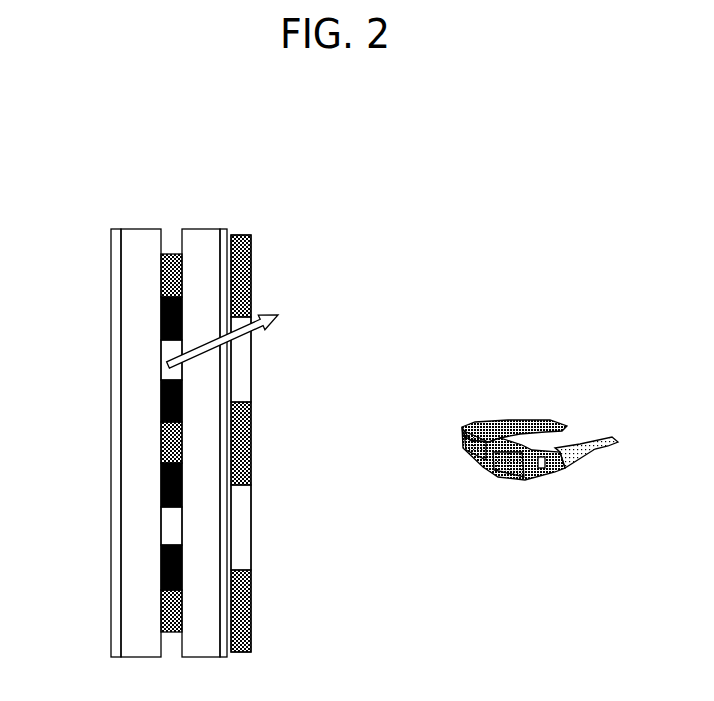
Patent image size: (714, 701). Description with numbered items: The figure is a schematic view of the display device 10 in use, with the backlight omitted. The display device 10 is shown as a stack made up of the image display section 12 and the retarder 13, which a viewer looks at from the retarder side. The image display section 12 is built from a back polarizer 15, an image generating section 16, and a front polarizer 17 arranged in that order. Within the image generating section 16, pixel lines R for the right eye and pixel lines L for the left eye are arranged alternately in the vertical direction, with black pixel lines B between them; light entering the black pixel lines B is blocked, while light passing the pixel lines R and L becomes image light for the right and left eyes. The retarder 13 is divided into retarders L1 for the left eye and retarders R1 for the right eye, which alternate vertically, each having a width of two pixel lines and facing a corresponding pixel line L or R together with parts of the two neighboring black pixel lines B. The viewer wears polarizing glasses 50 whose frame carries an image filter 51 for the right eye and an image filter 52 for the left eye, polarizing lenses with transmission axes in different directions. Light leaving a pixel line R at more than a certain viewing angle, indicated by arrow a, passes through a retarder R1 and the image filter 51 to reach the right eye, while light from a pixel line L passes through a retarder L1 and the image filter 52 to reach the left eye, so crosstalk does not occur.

The display device 10 is at (340, 155).
The image display section 12 is at (202, 176).
The retarder 13 is at (233, 237).
The back polarizer 15 is at (115, 229).
The image generating section 16 is at (225, 225).
The front polarizer 17 is at (226, 229).
The pixel lines for the left eye L is at (162, 283).
The black pixel lines B is at (165, 322).
The pixel lines for the right eye R is at (165, 373).
The retarders for the left eye L1 is at (248, 292).
The retarders for the right eye R1 is at (247, 389).
The arrow a is at (282, 318).
The polarizing glasses 50 is at (531, 394).
The image filter for the right eye 51 is at (478, 443).
The image filter for the left eye 52 is at (512, 463).